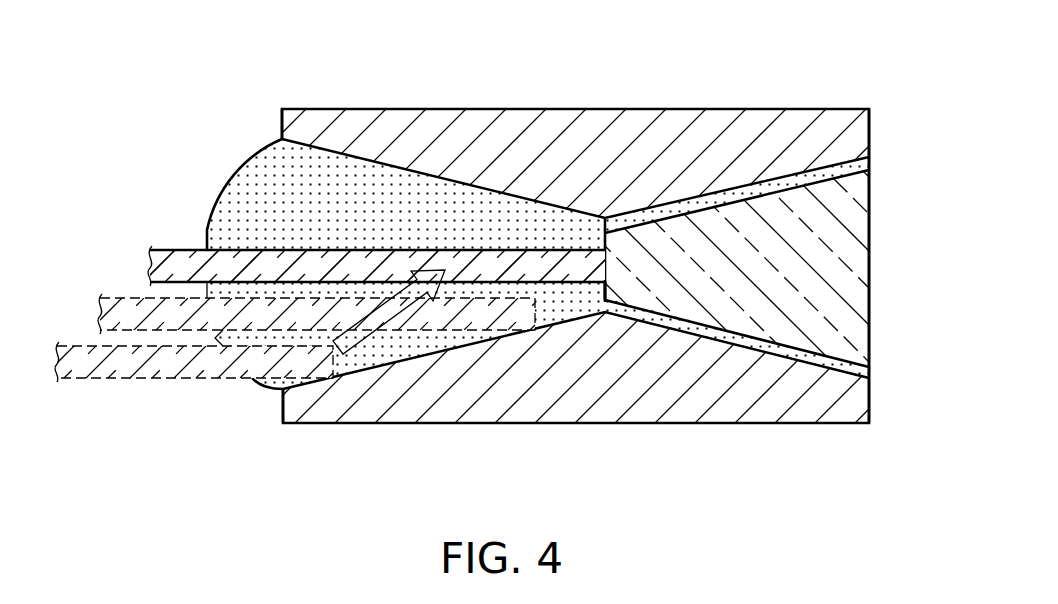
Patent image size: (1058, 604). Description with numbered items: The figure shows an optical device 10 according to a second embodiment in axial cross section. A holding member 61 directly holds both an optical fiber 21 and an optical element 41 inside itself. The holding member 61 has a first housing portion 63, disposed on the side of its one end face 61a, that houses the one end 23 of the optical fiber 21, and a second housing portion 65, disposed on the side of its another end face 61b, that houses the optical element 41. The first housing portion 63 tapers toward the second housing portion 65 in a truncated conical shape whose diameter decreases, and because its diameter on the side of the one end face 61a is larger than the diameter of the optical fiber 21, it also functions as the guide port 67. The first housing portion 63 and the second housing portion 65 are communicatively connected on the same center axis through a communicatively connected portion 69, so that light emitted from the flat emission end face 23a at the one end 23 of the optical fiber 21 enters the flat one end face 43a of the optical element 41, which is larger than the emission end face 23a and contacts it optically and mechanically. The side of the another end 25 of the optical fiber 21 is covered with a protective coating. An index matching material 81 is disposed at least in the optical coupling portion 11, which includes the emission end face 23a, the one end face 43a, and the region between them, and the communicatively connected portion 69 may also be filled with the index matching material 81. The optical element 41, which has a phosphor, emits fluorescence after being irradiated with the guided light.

The optical device 10 is at (532, 68).
The optical coupling portion 11 is at (653, 485).
The optical fiber 21 is at (311, 290).
The one end 23 is at (552, 283).
The emission end face 23a is at (603, 270).
The another end 25 is at (182, 255).
The optical element 41 is at (784, 320).
The one end face 43a is at (604, 272).
The holding member 61 is at (674, 162).
The one end face 61a is at (282, 125).
The another end face 61b is at (870, 133).
The first housing portion 63 is at (443, 153).
The second housing portion 65 is at (786, 178).
The guide port 67 is at (399, 178).
The communicatively connected portion 69 is at (598, 204).
The index matching material 81 is at (242, 192).